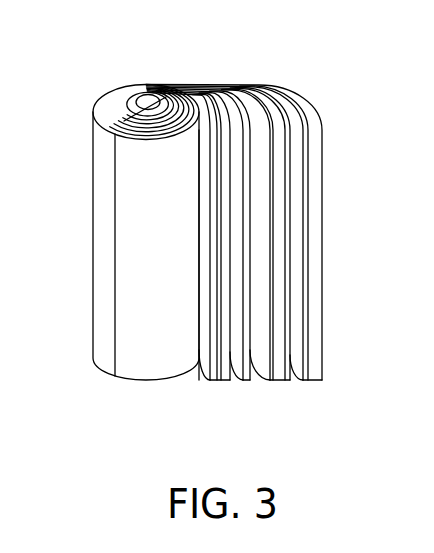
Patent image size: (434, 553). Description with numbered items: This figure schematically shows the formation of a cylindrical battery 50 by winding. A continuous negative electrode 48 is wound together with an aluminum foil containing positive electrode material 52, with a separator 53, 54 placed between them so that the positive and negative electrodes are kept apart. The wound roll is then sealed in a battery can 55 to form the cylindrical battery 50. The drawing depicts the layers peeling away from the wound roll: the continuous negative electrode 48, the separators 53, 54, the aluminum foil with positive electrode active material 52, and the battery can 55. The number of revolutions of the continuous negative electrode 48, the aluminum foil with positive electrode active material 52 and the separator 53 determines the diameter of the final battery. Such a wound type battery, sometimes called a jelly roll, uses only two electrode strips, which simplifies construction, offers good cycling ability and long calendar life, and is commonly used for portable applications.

The cylindrical battery 50 is at (93, 54).
The continuous negative electrode 48 is at (220, 384).
The separator 54 is at (246, 386).
The aluminum foil containing positive electrode material 52 is at (277, 386).
The separator 53 is at (309, 384).
The battery can 55 is at (312, 382).